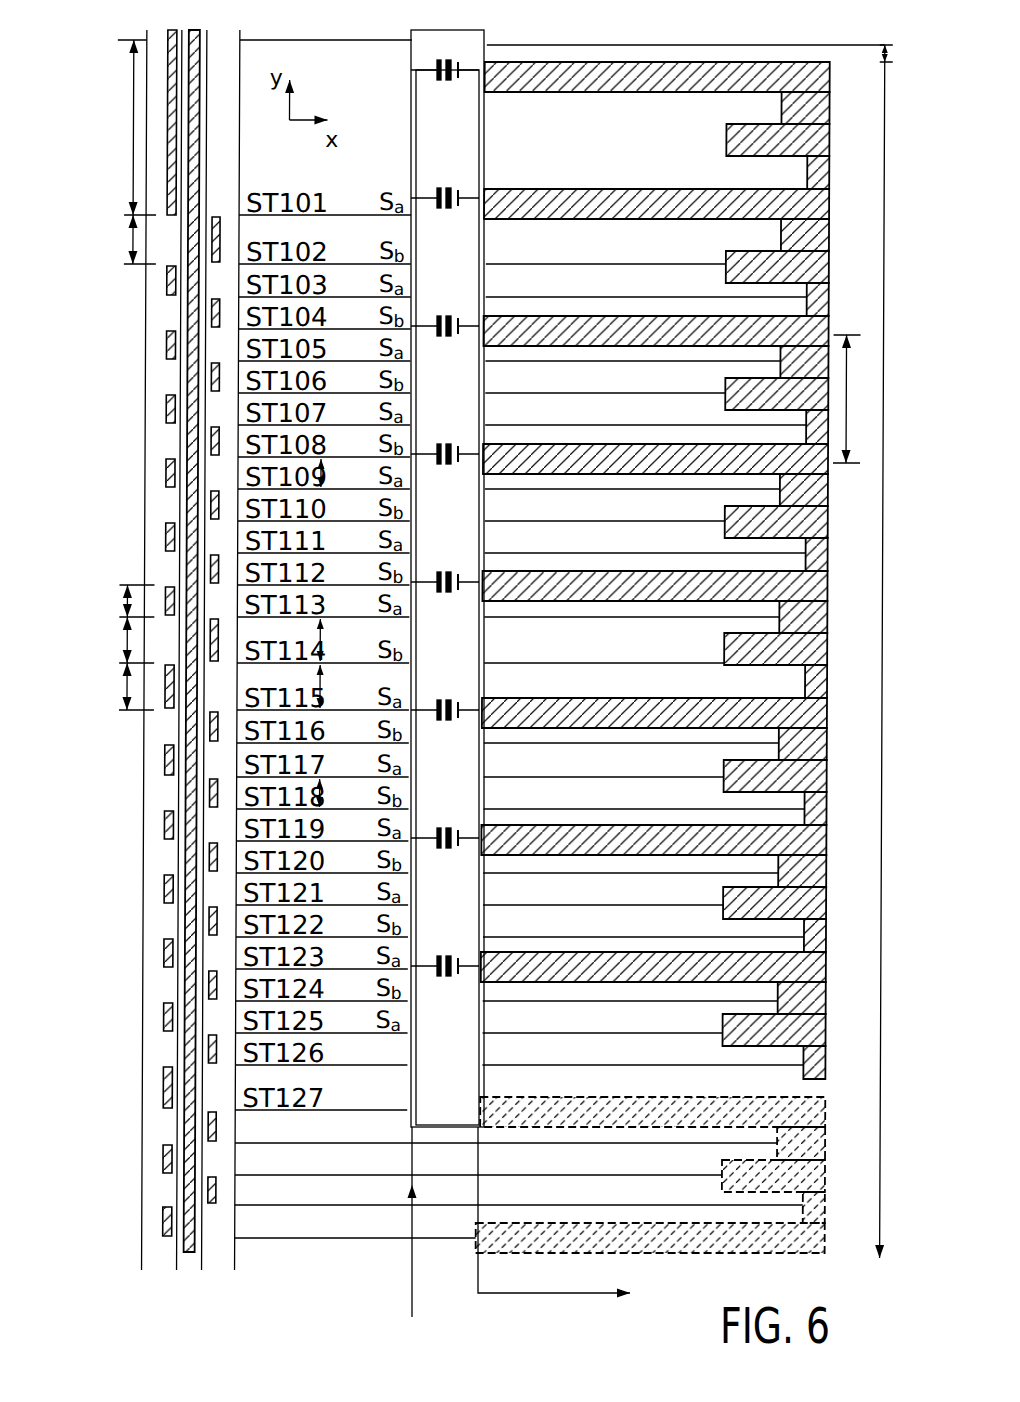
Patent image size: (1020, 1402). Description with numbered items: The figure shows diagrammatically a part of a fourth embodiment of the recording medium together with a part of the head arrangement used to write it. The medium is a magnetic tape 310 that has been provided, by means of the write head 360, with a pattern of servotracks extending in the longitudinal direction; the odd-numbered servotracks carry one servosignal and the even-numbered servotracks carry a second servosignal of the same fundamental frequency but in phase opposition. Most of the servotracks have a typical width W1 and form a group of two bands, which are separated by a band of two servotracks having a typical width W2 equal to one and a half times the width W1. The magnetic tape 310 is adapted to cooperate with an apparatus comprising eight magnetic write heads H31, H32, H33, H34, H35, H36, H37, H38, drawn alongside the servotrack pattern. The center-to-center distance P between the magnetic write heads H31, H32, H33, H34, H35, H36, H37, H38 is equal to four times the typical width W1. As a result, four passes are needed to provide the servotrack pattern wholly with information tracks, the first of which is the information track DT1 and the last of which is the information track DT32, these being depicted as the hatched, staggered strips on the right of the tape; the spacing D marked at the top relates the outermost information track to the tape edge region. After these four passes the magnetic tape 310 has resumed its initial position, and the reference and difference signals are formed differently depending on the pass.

The magnetic tape 310 is at (723, 45).
The write head 360 is at (147, 410).
The information track DT1 is at (831, 78).
The information track DT32 is at (829, 1063).
The magnetic write head H31 is at (445, 95).
The magnetic write head H32 is at (445, 223).
The magnetic write head H33 is at (445, 351).
The magnetic write head H34 is at (445, 479).
The magnetic write head H35 is at (445, 607).
The magnetic write head H36 is at (445, 735).
The magnetic write head H37 is at (445, 863).
The magnetic write head H38 is at (445, 991).
The center-to-center distance P is at (849, 399).
The electrode spacing D is at (894, 650).
The typical width W1 is at (211, 424).
The typical width W2 is at (222, 663).